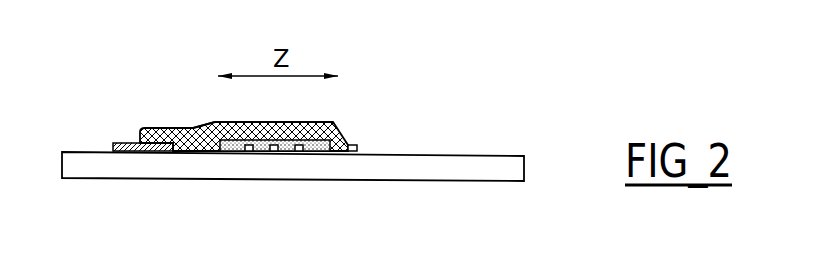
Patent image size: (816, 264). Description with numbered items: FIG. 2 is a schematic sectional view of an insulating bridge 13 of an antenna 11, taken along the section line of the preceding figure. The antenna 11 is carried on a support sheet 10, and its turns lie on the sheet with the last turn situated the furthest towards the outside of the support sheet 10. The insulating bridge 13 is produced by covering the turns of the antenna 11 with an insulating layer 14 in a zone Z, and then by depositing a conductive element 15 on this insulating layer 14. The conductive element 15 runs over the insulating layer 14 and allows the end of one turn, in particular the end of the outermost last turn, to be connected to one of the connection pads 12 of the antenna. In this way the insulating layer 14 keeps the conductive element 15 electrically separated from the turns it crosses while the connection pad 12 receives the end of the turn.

The support sheet 10 is at (519, 168).
The antenna 11 is at (353, 152).
The connection pad 12 is at (138, 153).
The insulating bridge 13 is at (386, 95).
The insulating layer 14 is at (320, 122).
The conductive element 15 is at (283, 122).